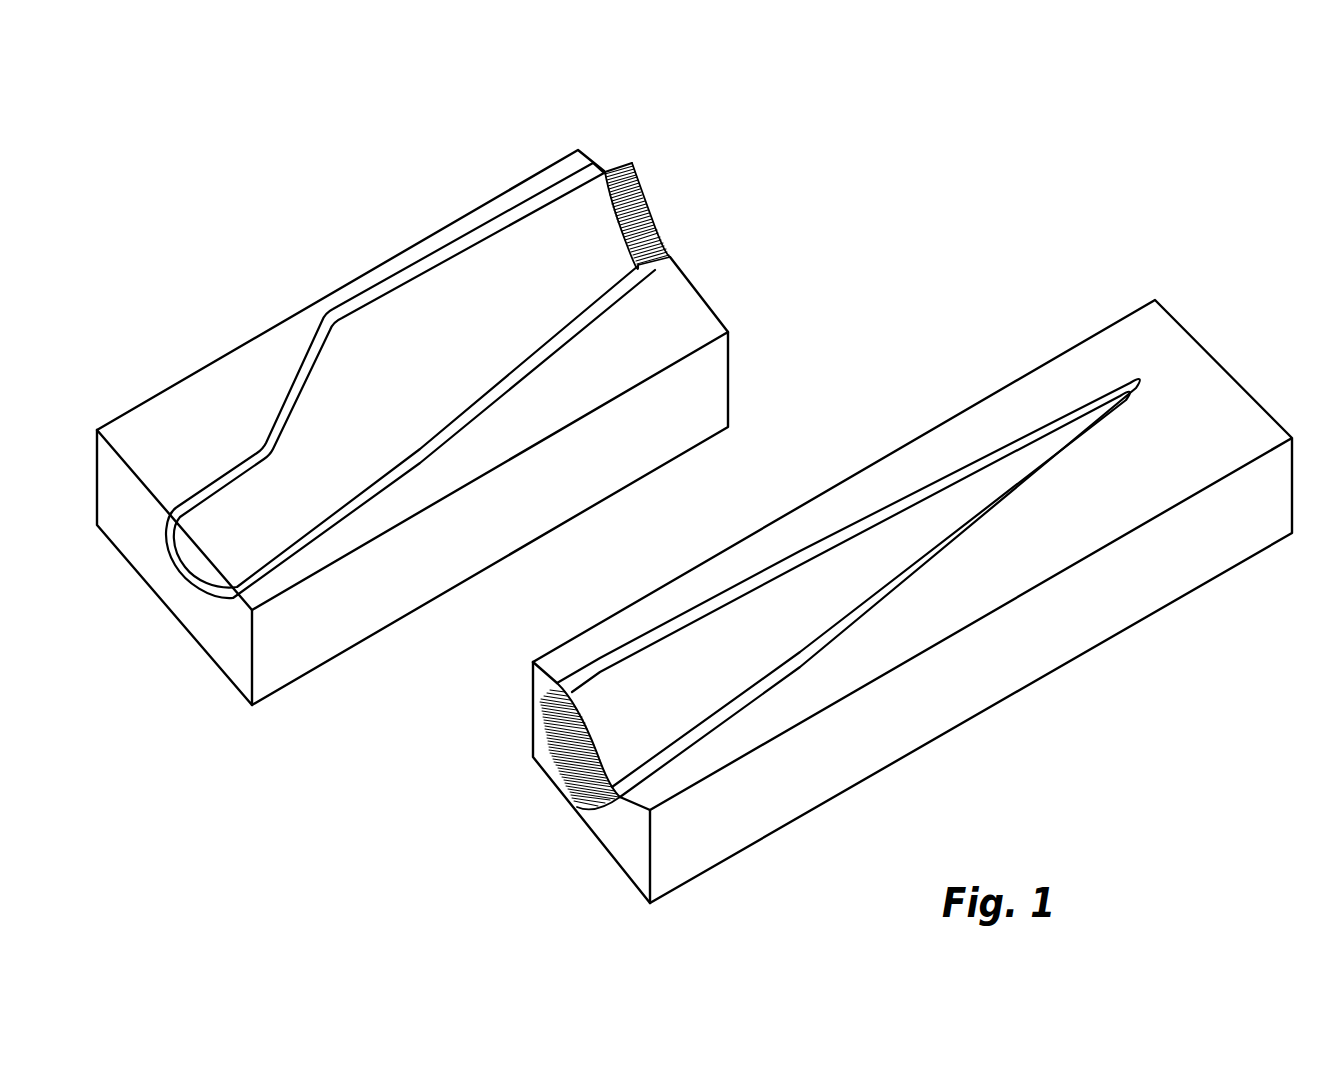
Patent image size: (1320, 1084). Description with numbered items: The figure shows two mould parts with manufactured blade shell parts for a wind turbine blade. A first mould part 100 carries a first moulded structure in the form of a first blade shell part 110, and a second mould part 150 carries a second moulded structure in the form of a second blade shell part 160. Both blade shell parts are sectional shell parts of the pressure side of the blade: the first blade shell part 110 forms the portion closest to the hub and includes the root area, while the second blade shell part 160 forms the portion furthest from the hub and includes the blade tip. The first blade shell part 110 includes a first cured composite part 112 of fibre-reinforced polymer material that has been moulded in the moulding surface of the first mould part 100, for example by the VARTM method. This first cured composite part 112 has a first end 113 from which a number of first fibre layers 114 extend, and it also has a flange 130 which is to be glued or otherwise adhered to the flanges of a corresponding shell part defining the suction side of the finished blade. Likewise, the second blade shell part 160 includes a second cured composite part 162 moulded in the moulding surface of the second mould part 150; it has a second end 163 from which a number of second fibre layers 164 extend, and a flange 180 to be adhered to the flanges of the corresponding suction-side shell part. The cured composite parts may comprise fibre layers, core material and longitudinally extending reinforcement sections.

The first mould part 100 is at (673, 338).
The first blade shell part 110 is at (626, 169).
The first cured composite part 112 is at (617, 163).
The first end 113 is at (607, 170).
The first fibre layers 114 is at (655, 223).
The flange 130 is at (360, 295).
The second mould part 150 is at (927, 450).
The second blade shell part 160 is at (499, 813).
The second cured composite part 162 is at (593, 812).
The second end 163 is at (600, 810).
The second fibre layers 164 is at (560, 763).
The flange 180 is at (663, 632).